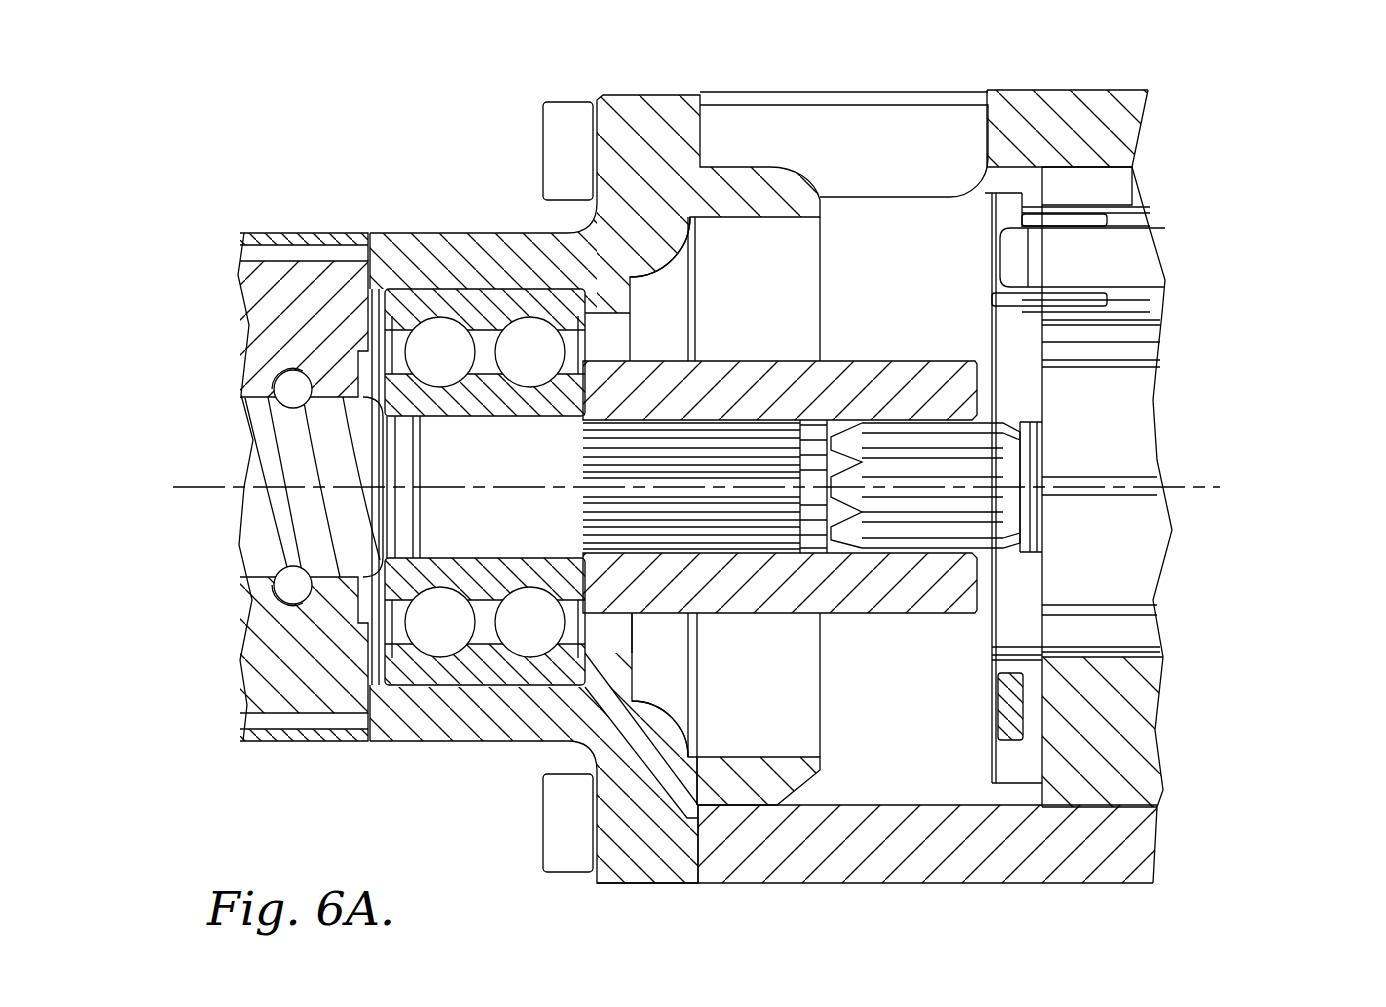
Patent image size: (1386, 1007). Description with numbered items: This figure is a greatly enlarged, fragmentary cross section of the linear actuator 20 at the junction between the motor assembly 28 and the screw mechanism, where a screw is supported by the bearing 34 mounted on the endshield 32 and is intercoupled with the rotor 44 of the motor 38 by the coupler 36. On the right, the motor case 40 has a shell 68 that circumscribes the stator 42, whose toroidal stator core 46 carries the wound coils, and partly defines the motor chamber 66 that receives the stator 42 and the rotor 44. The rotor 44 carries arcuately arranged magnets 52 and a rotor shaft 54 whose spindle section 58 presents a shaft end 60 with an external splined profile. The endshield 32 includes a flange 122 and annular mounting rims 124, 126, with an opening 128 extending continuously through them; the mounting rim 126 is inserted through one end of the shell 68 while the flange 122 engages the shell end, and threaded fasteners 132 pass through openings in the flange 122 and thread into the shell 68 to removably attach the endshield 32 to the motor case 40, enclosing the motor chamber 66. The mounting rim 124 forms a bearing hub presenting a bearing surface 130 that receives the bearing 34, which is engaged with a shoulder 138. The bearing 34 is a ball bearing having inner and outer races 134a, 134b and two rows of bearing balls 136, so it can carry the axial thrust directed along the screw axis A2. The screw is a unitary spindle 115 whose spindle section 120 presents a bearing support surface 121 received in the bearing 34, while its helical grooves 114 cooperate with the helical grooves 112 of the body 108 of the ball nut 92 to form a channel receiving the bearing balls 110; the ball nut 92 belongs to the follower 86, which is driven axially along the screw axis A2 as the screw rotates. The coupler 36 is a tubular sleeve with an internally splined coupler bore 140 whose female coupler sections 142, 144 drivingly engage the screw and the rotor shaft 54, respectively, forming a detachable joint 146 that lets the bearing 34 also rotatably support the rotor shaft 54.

The linear actuator 20 is at (1248, 94).
The motor assembly 28 is at (1105, 105).
The endshield 32 is at (655, 100).
The bearing 34 is at (400, 300).
The coupler 36 is at (1000, 386).
The motor 38 is at (243, 236).
The motor case 40 is at (1130, 846).
The stator 42 is at (1132, 242).
The rotor 44 is at (1148, 590).
The stator core 46 is at (1147, 270).
The magnets 52 is at (1145, 398).
The rotor shaft 54 is at (1027, 467).
The spindle section 58 is at (1027, 443).
The shaft end 60 is at (927, 68).
The motor chamber 66 is at (906, 790).
The shell 68 is at (990, 868).
The follower 86 is at (290, 272).
The ball nut 92 is at (278, 678).
The body 108 is at (243, 294).
The bearing balls 110 is at (290, 397).
The helical grooves 112 is at (282, 384).
The helical grooves 114 is at (318, 436).
The unitary spindle 115 is at (583, 420).
The spindle section 120 is at (765, 448).
The bearing support surface 121 is at (482, 300).
The flange 122 is at (650, 882).
The mounting rim 124 is at (473, 725).
The mounting rim 126 is at (773, 772).
The opening 128 is at (612, 660).
The bearing surface 130 is at (437, 690).
The threaded fasteners 132 is at (565, 112).
The inner race 134a is at (517, 402).
The outer race 134b is at (437, 300).
The bearing balls 136 is at (523, 310).
The shoulder 138 is at (578, 298).
The coupler bore 140 is at (828, 445).
The female coupler section 142 is at (763, 380).
The female coupler section 144 is at (957, 370).
The detachable joint 146 is at (927, 593).
The screw axis A2 is at (203, 486).